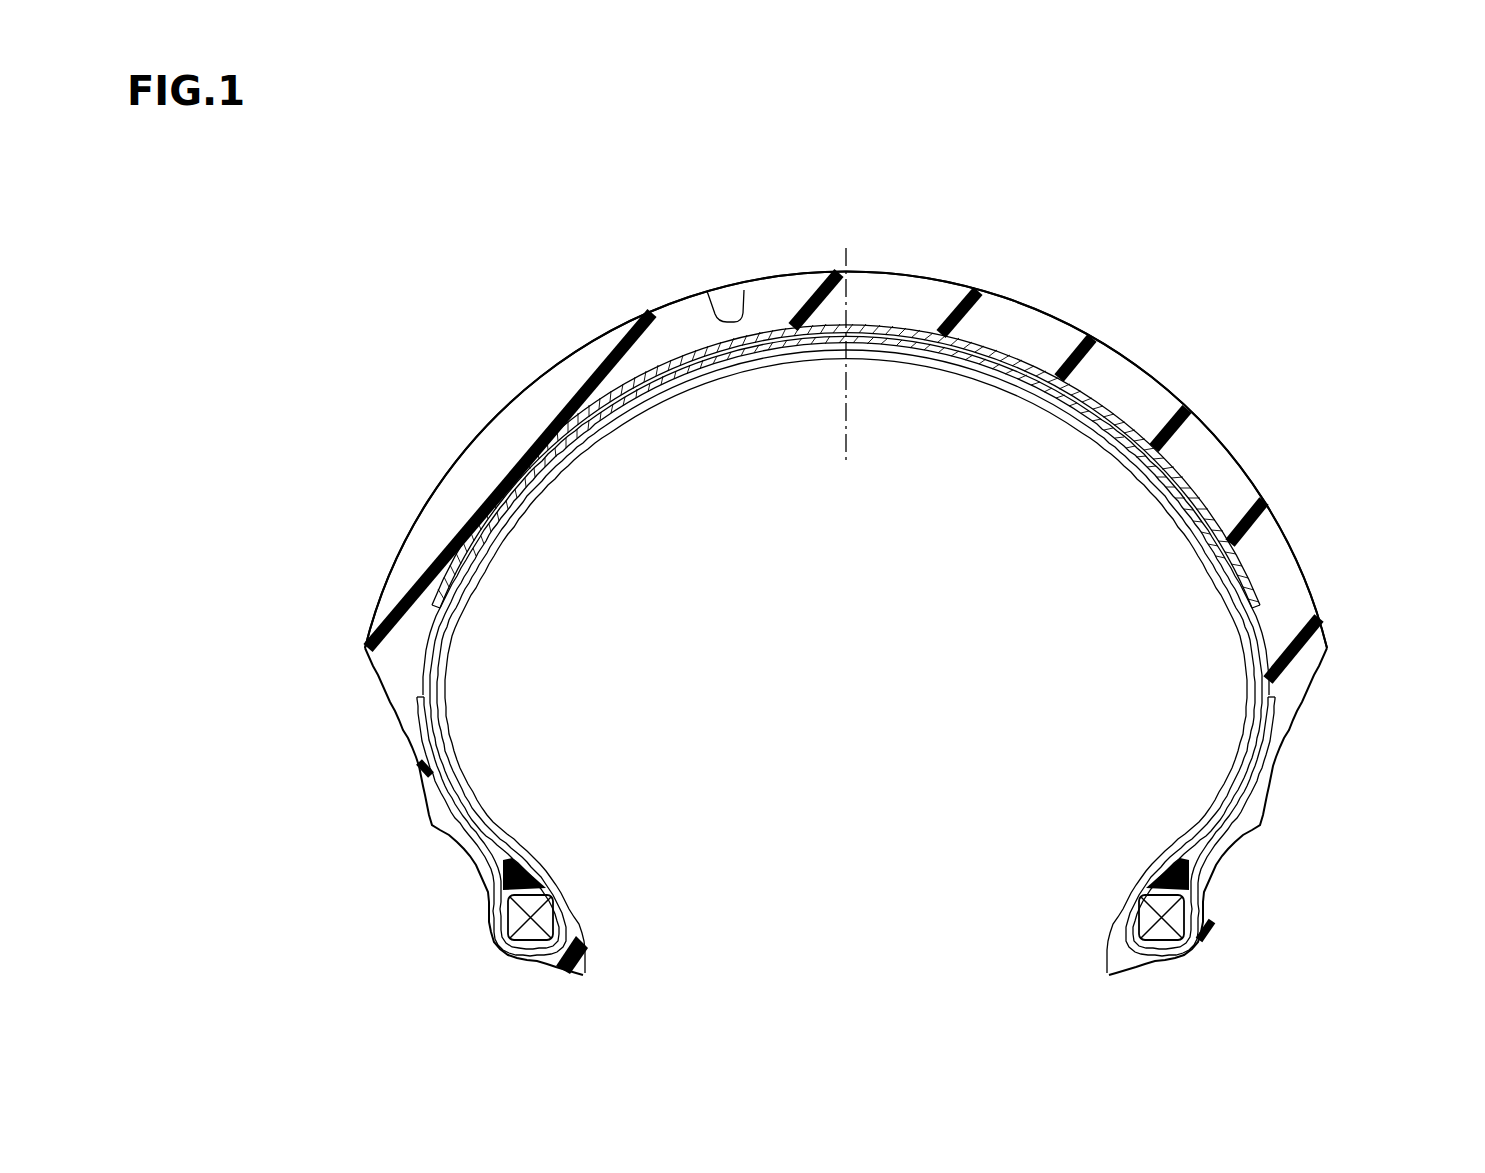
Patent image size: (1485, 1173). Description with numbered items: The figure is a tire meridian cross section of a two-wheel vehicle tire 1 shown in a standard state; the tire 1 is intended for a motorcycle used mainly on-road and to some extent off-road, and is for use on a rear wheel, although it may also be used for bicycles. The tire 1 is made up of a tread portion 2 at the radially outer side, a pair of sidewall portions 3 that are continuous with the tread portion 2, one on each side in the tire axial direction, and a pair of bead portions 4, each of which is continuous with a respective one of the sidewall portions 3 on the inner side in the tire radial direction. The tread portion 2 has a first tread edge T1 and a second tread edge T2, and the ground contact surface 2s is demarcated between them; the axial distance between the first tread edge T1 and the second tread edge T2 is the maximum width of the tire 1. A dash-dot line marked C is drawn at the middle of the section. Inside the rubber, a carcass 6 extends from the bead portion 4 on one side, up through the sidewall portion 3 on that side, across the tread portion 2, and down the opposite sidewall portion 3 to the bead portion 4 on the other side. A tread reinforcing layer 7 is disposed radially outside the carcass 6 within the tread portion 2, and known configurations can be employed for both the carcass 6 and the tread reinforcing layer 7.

The two-wheel vehicle tire 1 is at (1108, 225).
The tread portion 2 is at (512, 349).
The ground contact surface 2s is at (1122, 357).
The sidewall portions 3 is at (386, 760).
The bead portions 4 is at (457, 902).
The carcass 6 is at (805, 350).
The tread reinforcing layer 7 is at (972, 350).
The first tread edge T1 is at (363, 648).
The second tread edge T2 is at (1330, 648).
The tire equator C is at (846, 340).